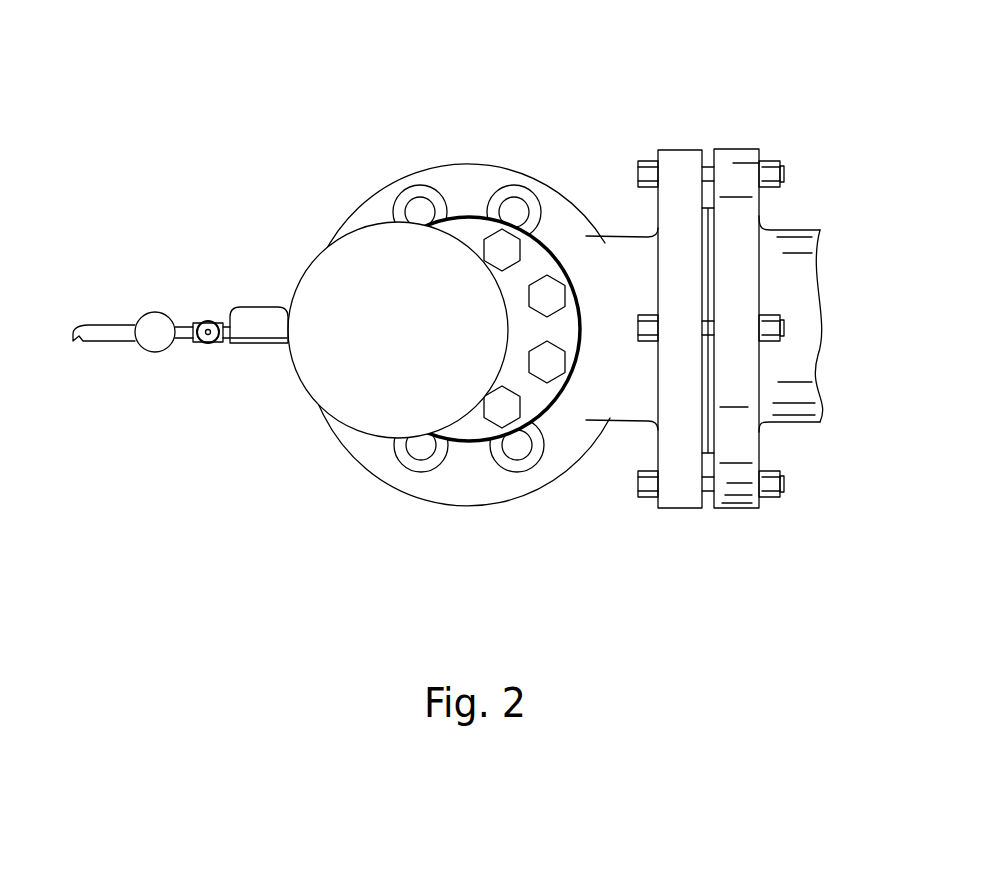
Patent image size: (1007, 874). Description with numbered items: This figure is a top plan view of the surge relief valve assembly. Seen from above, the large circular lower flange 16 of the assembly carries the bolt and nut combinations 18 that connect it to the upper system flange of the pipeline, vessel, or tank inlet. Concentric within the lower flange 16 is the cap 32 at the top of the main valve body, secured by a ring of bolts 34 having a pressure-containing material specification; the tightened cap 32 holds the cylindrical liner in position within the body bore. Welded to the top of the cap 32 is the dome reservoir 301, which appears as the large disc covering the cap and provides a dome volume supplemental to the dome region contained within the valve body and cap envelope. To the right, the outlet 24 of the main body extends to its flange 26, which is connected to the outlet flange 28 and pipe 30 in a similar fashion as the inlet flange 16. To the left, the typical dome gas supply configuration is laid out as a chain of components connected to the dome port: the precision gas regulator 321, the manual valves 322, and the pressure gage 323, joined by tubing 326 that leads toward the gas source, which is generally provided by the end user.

The lower flange 16 is at (375, 195).
The bolt and nut combinations 18 is at (418, 199).
The cap 32 is at (467, 230).
The bolts 34 is at (510, 243).
The dome reservoir 301 is at (342, 275).
The outlet 24 is at (630, 236).
The flange 26 is at (672, 150).
The outlet flange 28 is at (737, 155).
The pipe 30 is at (798, 230).
The precision gas regulator 321 is at (157, 312).
The manual valves 322 is at (207, 320).
The pressure gage 323 is at (260, 320).
The tubing 326 is at (97, 328).